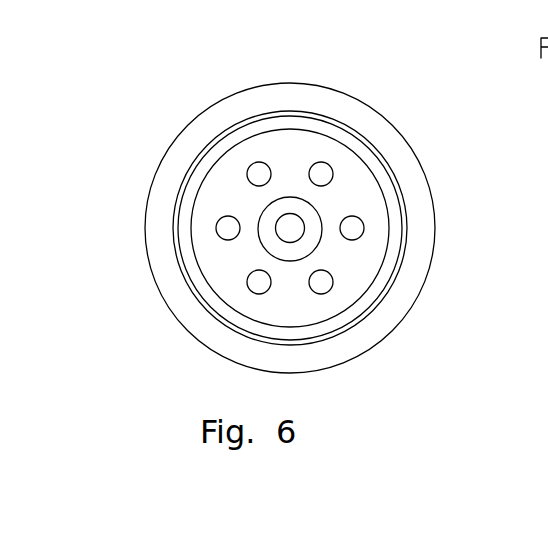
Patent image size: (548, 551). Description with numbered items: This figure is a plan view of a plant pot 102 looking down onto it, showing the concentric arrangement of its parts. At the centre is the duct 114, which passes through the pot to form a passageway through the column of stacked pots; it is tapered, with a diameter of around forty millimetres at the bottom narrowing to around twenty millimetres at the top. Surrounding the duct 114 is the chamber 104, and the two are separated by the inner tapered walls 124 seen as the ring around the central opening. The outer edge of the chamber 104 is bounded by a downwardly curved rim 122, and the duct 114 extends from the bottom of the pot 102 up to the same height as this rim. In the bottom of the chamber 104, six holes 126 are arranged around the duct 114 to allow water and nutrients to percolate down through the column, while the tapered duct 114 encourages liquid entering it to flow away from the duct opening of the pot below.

The plant pot 102 is at (422, 169).
The chamber 104 is at (348, 180).
The duct 114 is at (290, 230).
The downwardly curved rim 122 is at (405, 218).
The inner tapered walls 124 is at (310, 243).
The holes 126 is at (222, 227).